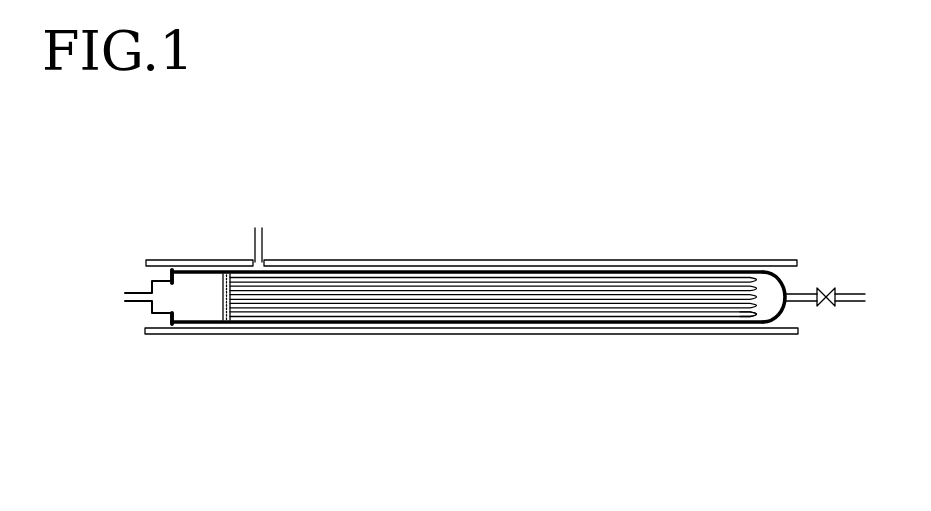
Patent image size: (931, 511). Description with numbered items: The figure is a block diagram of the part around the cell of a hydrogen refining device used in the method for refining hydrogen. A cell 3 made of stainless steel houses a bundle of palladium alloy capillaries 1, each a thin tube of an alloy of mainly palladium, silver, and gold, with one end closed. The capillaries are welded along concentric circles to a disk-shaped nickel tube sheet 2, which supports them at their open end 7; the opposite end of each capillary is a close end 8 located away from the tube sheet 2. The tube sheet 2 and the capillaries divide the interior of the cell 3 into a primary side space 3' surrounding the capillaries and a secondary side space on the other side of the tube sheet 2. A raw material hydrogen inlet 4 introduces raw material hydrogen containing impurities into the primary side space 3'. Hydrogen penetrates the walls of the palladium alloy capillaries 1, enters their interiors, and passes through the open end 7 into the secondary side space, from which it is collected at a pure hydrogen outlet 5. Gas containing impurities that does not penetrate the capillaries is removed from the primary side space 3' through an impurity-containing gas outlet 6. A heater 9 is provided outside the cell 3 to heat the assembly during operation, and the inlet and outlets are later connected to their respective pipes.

The palladium alloy capillaries 1 is at (402, 277).
The tube sheet 2 is at (221, 297).
The cell 3 is at (467, 235).
The primary side space 3' is at (798, 354).
The raw material hydrogen inlet 4 is at (790, 295).
The pure hydrogen outlet 5 is at (170, 292).
The impurity-containing gas outlet 6 is at (268, 261).
The open end 7 is at (235, 315).
The close end 8 is at (747, 313).
The heater 9 is at (533, 258).